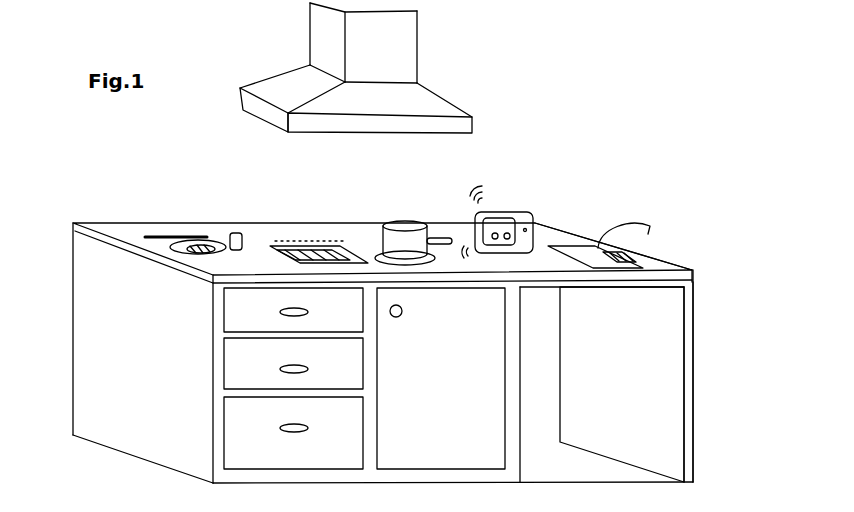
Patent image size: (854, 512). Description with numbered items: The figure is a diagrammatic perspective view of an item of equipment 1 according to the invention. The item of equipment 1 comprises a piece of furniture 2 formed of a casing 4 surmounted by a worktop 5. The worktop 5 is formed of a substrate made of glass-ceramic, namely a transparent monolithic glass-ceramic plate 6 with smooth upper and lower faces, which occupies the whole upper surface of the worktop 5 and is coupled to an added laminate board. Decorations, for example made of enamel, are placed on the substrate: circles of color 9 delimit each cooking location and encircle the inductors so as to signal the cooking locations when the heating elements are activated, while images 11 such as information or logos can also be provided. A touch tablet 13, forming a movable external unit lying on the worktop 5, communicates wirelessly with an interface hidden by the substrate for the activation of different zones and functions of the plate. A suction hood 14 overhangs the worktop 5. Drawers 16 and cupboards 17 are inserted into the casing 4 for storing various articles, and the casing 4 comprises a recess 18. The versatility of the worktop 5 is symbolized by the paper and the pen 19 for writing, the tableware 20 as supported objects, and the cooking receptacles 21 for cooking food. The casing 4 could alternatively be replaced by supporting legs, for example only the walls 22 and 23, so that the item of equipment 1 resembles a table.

The item of equipment 1 is at (619, 162).
The piece of furniture 2 is at (113, 222).
The casing 4 is at (95, 295).
The worktop 5 is at (549, 246).
The glass-ceramic plate 6 is at (692, 270).
The circles of color 9 is at (433, 255).
The images 11 is at (300, 240).
The touch tablet 13 is at (518, 212).
The suction hood 14 is at (405, 43).
The drawers 16 is at (233, 442).
The cupboards 17 is at (492, 438).
The recess 18 is at (553, 369).
The paper and the pen 19 is at (618, 252).
The tableware 20 is at (237, 233).
The cooking receptacles 21 is at (403, 224).
The wall 22 is at (693, 358).
The wall 23 is at (80, 388).